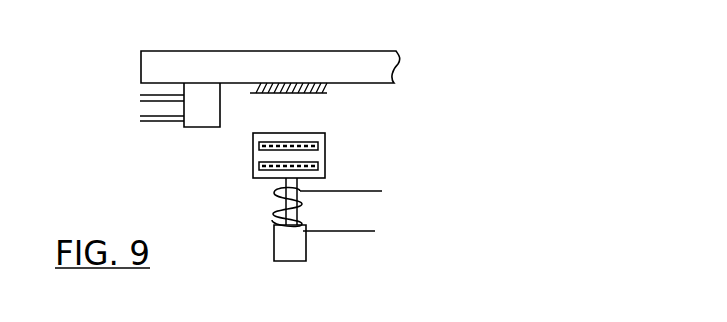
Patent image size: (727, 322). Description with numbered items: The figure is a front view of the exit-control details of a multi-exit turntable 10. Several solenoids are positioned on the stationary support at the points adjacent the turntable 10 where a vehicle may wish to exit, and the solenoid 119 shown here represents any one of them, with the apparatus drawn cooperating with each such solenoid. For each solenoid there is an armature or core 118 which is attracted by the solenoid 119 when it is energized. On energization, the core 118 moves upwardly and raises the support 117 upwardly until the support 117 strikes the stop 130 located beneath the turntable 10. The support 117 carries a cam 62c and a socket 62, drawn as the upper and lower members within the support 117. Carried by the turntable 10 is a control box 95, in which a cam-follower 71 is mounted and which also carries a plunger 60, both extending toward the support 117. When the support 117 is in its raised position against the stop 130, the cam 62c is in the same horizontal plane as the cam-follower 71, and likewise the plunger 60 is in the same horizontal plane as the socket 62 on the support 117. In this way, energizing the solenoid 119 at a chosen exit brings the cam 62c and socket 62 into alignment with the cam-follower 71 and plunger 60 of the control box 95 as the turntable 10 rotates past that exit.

The turntable 10 is at (258, 50).
The stop 130 is at (301, 93).
The control box 95 is at (212, 127).
The cam-follower 71 is at (143, 98).
The plunger 60 is at (143, 119).
The support 117 is at (313, 133).
The cam 62c is at (318, 146).
The socket 62 is at (318, 167).
The solenoid 119 is at (272, 216).
The armature or core 118 is at (275, 246).